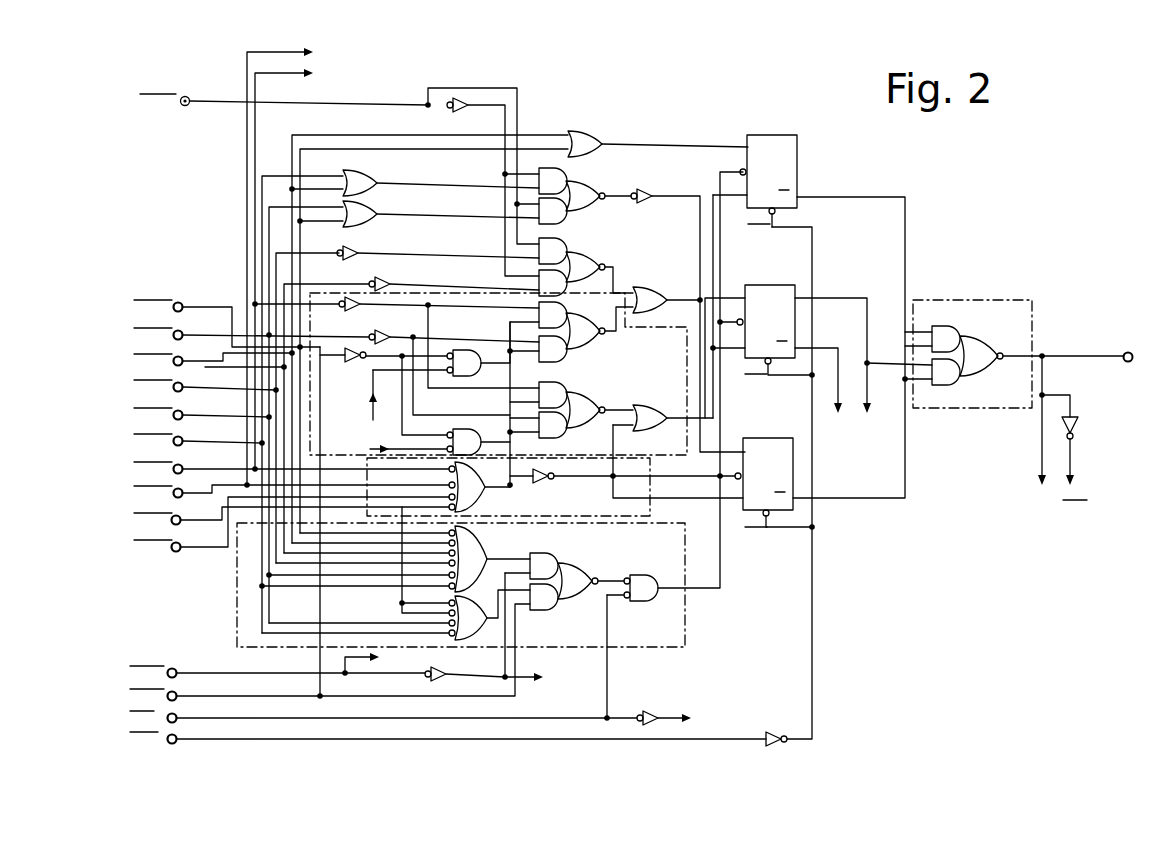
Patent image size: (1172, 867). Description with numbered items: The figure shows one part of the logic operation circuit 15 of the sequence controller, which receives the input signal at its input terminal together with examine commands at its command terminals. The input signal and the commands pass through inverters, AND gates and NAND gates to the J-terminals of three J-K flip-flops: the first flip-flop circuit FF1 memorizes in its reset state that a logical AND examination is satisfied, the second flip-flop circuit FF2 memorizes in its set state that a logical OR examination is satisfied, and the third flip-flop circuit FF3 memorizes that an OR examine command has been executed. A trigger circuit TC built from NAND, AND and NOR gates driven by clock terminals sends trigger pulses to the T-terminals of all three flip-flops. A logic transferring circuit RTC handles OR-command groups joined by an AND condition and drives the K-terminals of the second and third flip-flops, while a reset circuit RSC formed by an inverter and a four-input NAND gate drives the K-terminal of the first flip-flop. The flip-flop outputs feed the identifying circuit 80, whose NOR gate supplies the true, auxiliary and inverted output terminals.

The logic operation circuit 15 is at (704, 114).
The identifying circuit 80 is at (1032, 300).
The first J-K flip-flop circuit FF1 is at (773, 482).
The second J-K flip-flop circuit FF2 is at (774, 329).
The third J-K flip-flop circuit FF3 is at (768, 179).
The logic transferring circuit RTC is at (650, 337).
The reset circuit RSC is at (652, 460).
The trigger circuit TC is at (687, 640).